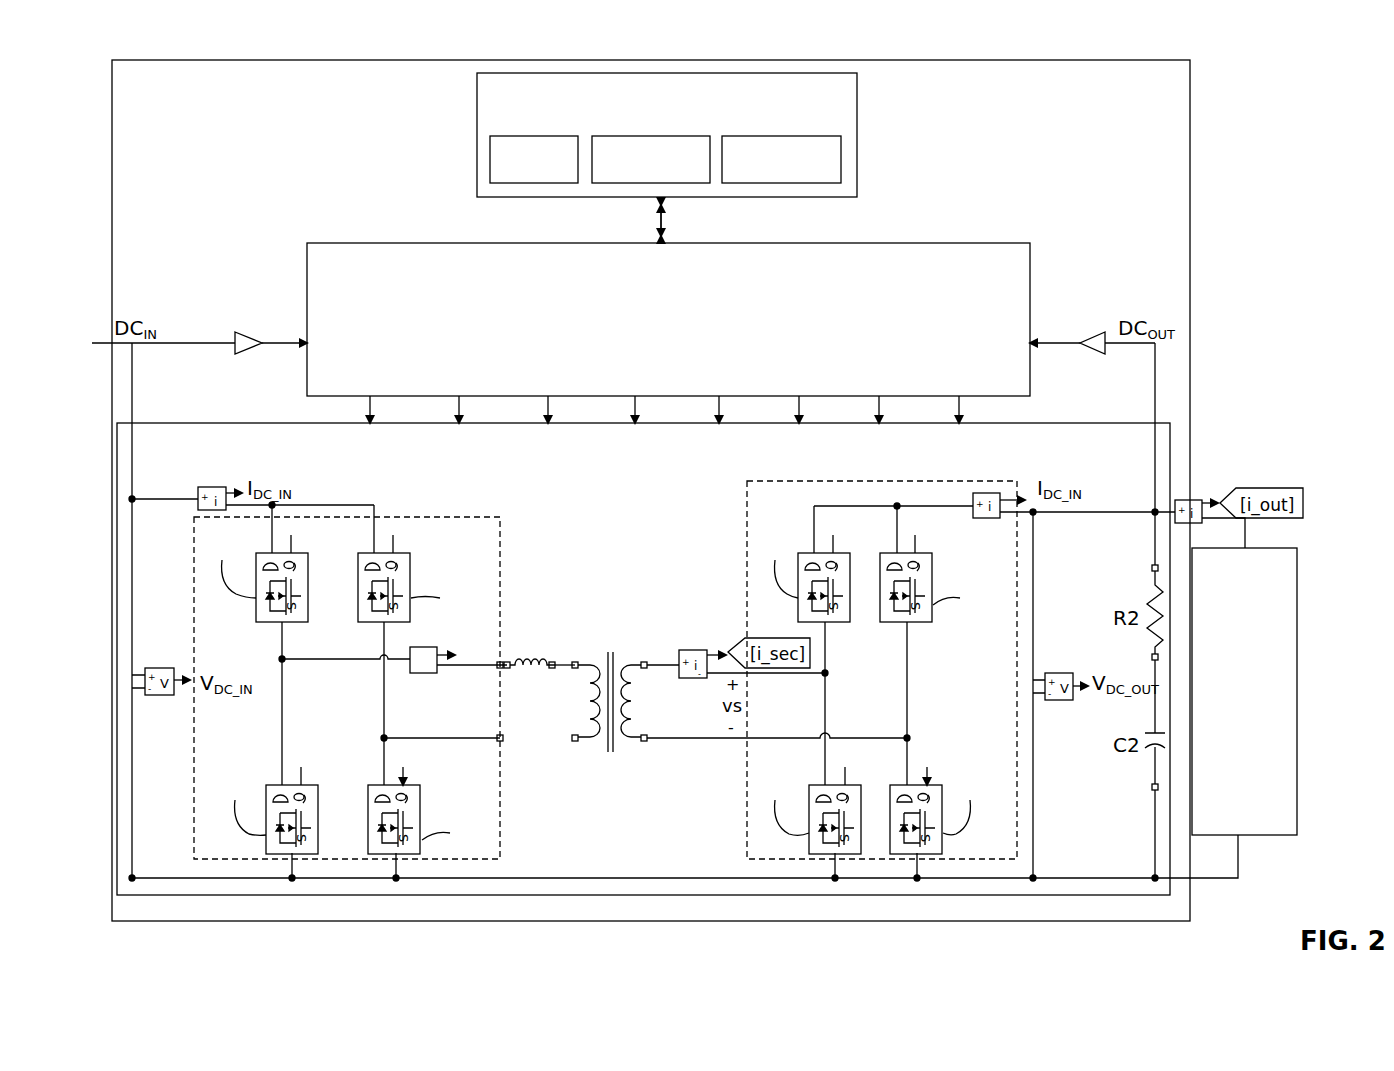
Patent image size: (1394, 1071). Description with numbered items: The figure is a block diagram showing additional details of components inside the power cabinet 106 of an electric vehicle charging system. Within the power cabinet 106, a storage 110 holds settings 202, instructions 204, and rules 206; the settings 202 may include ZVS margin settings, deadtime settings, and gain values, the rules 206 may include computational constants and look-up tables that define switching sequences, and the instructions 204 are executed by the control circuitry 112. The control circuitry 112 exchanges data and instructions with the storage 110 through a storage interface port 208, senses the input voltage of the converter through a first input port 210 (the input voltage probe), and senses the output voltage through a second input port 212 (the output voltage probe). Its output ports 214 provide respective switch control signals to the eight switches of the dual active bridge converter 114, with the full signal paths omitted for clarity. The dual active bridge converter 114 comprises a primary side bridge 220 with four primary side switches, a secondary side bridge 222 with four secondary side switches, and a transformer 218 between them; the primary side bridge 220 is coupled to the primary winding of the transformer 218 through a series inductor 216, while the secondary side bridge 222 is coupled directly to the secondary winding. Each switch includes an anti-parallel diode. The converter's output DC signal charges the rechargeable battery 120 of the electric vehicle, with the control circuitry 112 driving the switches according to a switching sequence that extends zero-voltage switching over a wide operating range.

The power cabinet 106 is at (178, 59).
The storage 110 is at (476, 138).
The control circuitry 112 is at (375, 243).
The dual active bridge converter 114 is at (235, 423).
The rechargeable battery 120 is at (1275, 835).
The settings 202 is at (552, 136).
The instructions 204 is at (659, 136).
The rules 206 is at (789, 136).
The storage interface port 208 is at (653, 226).
The first input port 210 is at (392, 347).
The second input port 212 is at (930, 335).
The output ports 214 is at (544, 352).
The series inductor 216 is at (530, 652).
The transformer 218 is at (612, 652).
The primary side bridge 220 is at (430, 517).
The secondary side bridge 222 is at (820, 481).